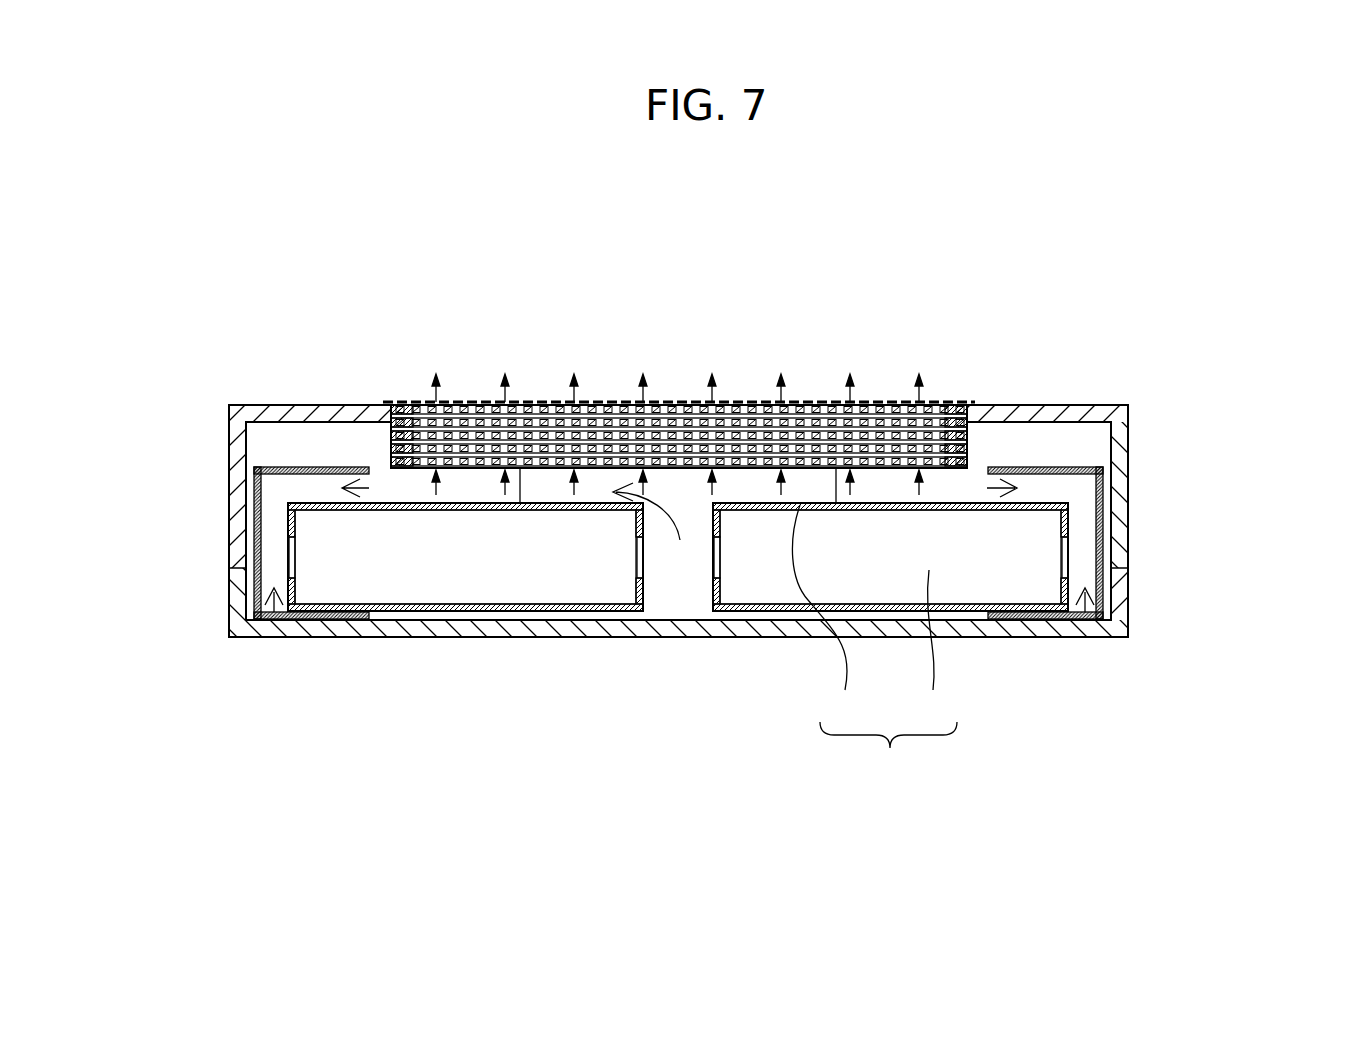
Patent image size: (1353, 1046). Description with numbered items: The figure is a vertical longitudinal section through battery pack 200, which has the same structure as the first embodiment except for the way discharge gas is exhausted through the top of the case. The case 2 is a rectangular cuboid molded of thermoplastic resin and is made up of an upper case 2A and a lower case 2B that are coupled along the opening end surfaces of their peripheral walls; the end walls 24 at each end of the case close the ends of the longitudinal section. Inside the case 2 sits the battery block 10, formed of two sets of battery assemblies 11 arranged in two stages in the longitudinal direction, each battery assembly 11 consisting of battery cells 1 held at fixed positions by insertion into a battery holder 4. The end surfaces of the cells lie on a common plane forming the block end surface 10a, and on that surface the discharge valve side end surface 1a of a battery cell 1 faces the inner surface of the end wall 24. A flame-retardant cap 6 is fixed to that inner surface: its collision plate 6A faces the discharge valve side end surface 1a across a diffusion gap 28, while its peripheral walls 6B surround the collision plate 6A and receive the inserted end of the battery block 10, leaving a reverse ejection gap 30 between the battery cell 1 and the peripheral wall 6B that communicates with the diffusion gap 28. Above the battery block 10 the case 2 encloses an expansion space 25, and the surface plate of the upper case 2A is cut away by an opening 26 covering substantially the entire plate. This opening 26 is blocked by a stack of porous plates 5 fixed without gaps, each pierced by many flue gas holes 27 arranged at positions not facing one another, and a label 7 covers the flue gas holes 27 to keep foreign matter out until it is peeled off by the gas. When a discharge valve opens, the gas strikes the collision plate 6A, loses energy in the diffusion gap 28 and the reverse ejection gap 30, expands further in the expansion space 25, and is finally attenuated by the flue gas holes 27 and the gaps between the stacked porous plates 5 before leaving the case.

The battery pack 200 is at (781, 421).
The case 2 is at (781, 521).
The upper case 2A is at (1170, 467).
The lower case 2B is at (757, 602).
The end wall 24 is at (185, 622).
The flame-retardant cap 6 is at (586, 533).
The collision plate 6A is at (614, 543).
The peripheral wall 6B is at (317, 467).
The diffusion gap 28 is at (275, 622).
The label 7 is at (709, 379).
The porous plate 5 is at (477, 402).
The flue gas hole 27 is at (826, 390).
The opening 26 is at (972, 412).
The reverse ejection gap 30 is at (385, 488).
The expansion space 25 is at (660, 532).
The battery block 10 is at (609, 650).
The battery assembly 11 is at (396, 623).
The battery holder 4 is at (402, 505).
The battery cell 1 is at (402, 632).
The discharge valve side end surface 1a is at (273, 578).
The block end surface 10a is at (267, 522).